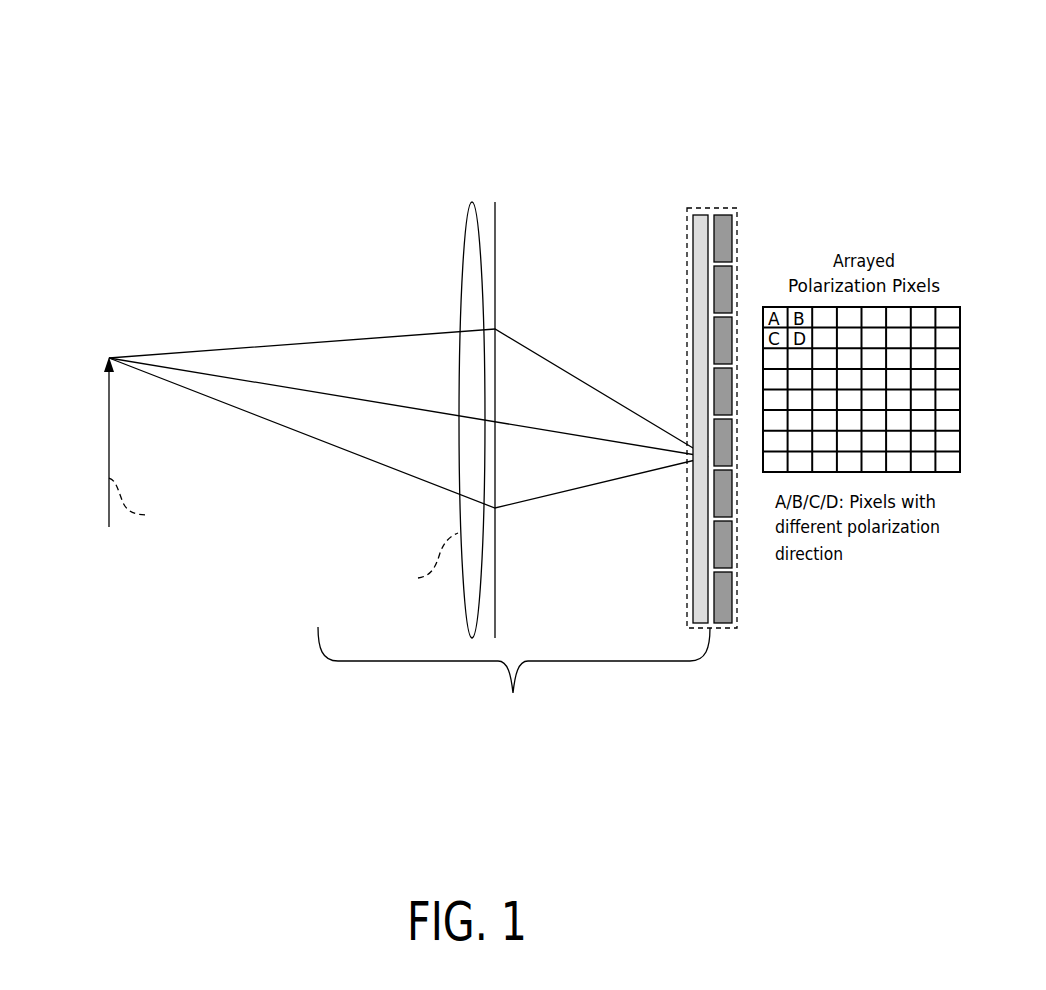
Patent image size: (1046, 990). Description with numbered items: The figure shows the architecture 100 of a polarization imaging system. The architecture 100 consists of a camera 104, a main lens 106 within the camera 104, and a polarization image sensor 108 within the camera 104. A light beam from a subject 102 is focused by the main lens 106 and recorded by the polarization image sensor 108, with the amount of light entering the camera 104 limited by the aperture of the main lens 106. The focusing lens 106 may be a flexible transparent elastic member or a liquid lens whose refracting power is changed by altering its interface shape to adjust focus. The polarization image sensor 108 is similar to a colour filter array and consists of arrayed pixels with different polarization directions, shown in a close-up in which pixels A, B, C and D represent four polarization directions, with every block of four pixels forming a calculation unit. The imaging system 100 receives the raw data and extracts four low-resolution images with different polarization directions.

The polarization imaging system architecture 100 is at (825, 82).
The subject 102 is at (107, 368).
The camera 104 is at (514, 686).
The main lens 106 is at (460, 278).
The polarization image sensor 108 is at (737, 600).